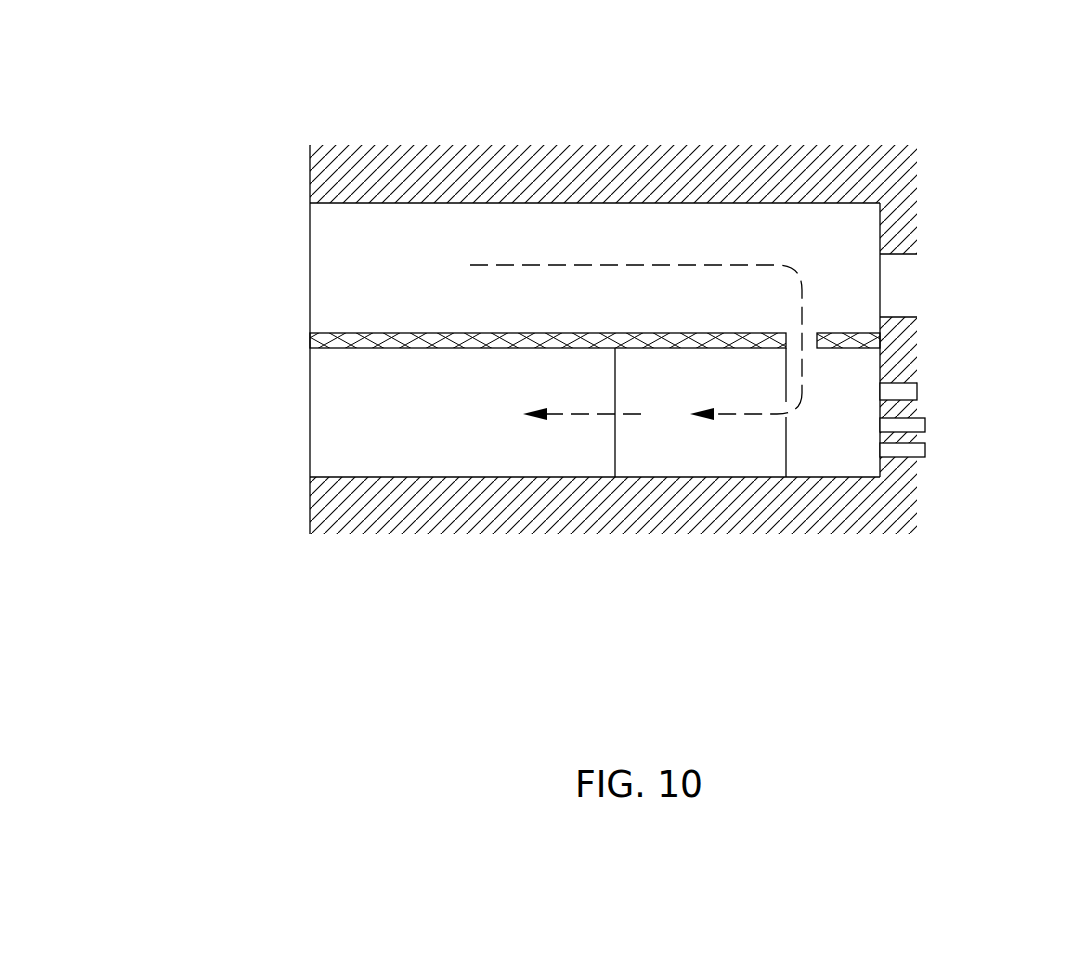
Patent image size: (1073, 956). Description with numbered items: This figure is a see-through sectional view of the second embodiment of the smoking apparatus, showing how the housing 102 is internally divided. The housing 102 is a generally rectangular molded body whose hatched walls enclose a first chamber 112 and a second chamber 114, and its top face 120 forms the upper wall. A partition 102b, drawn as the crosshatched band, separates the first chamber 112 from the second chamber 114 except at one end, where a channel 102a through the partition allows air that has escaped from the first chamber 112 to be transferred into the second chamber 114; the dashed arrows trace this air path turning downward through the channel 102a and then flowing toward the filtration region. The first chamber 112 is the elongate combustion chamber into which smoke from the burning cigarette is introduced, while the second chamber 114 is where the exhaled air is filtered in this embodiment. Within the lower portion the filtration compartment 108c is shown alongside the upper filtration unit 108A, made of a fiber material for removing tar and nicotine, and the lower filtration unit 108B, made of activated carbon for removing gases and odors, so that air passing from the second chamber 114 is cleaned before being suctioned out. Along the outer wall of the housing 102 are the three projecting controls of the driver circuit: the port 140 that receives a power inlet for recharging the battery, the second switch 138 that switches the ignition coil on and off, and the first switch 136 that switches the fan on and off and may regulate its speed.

The housing 102 is at (950, 130).
The top face 120 is at (917, 215).
The first chamber 112 is at (595, 222).
The channel 102a is at (807, 341).
The partition 102b is at (350, 340).
The filtration compartment 108c is at (338, 460).
The lower filtration unit 108B is at (527, 435).
The upper filtration unit 108A is at (708, 432).
The second chamber 114 is at (813, 448).
The port 140 is at (917, 388).
The second switch 138 is at (925, 421).
The first switch 136 is at (925, 450).